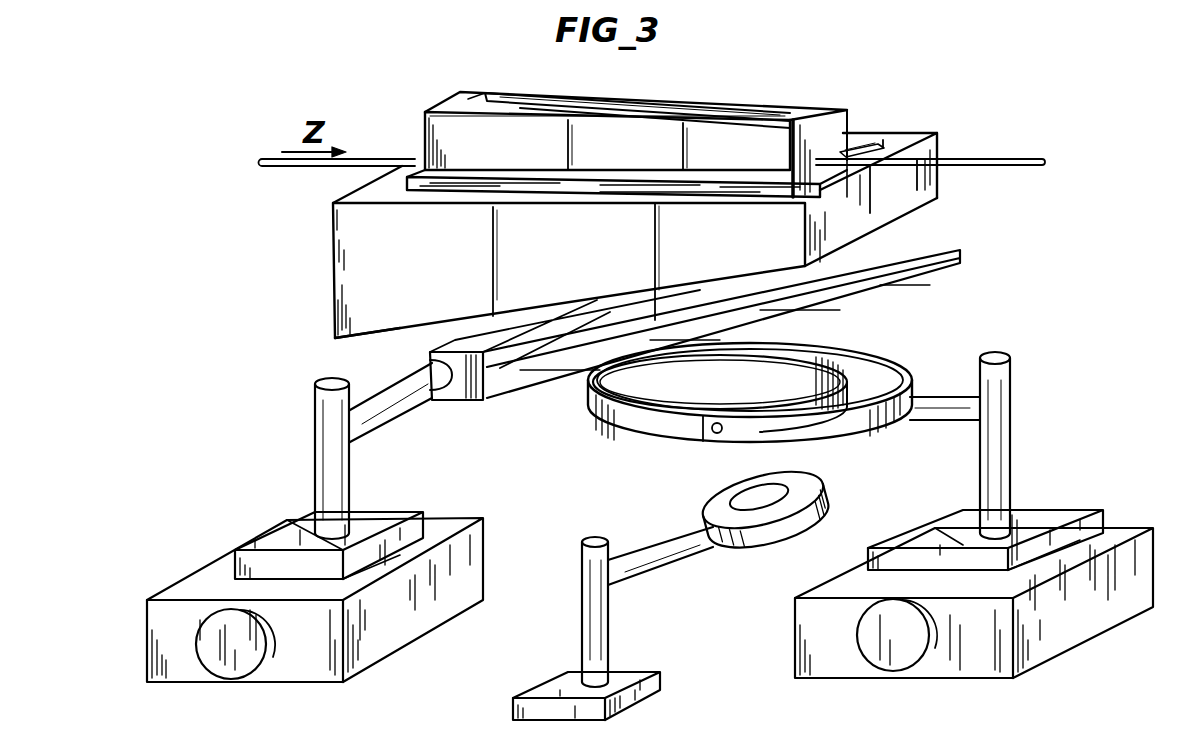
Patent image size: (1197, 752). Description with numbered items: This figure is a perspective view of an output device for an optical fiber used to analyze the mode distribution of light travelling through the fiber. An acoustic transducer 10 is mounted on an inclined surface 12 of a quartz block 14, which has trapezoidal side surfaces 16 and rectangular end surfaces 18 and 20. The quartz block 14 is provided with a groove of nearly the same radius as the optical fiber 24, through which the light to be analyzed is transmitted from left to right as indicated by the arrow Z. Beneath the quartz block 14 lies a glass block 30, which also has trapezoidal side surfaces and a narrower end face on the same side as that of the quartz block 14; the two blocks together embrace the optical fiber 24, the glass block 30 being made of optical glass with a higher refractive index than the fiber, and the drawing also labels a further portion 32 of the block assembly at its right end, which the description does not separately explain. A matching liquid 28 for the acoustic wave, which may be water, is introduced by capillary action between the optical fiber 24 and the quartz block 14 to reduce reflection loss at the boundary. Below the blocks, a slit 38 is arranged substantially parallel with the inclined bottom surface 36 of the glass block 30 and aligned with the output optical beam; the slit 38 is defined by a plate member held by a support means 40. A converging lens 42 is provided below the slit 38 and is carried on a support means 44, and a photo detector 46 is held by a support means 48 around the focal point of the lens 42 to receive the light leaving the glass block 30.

The acoustic transducer 10 is at (690, 110).
The inclined surface 12 is at (478, 94).
The quartz block 14 is at (445, 138).
The trapezoidal side surfaces 16 is at (455, 125).
The rectangular end surface 18 is at (847, 110).
The rectangular end surface 20 is at (424, 128).
The optical fiber 24 is at (968, 162).
The matching liquid 28 is at (863, 147).
The glass block 30 is at (358, 268).
The end face 32 is at (933, 148).
The inclined bottom surface 36 is at (358, 338).
The slit 38 is at (833, 252).
The support means 40 is at (317, 460).
The converging lens 42 is at (833, 347).
The support means 44 is at (1010, 477).
The photo detector 46 is at (783, 527).
The support means 48 is at (590, 597).